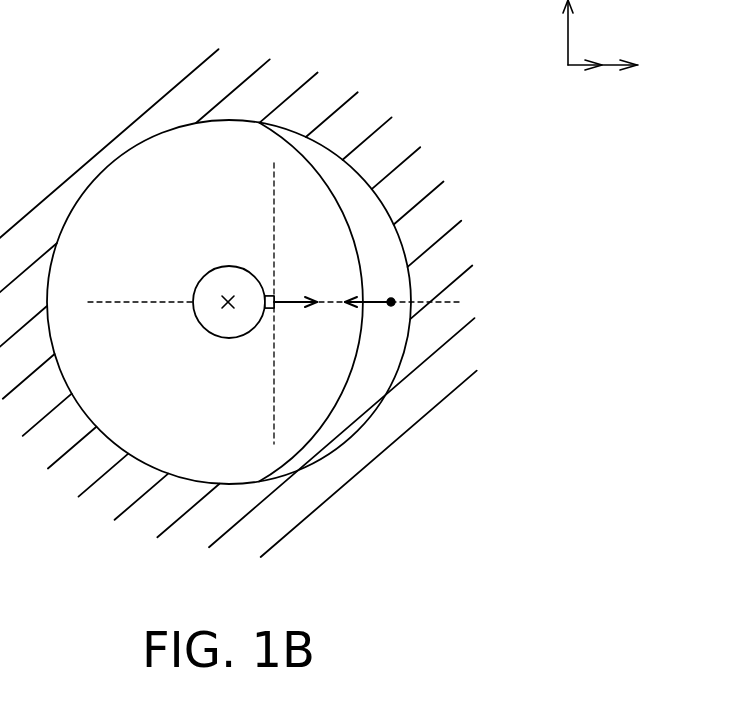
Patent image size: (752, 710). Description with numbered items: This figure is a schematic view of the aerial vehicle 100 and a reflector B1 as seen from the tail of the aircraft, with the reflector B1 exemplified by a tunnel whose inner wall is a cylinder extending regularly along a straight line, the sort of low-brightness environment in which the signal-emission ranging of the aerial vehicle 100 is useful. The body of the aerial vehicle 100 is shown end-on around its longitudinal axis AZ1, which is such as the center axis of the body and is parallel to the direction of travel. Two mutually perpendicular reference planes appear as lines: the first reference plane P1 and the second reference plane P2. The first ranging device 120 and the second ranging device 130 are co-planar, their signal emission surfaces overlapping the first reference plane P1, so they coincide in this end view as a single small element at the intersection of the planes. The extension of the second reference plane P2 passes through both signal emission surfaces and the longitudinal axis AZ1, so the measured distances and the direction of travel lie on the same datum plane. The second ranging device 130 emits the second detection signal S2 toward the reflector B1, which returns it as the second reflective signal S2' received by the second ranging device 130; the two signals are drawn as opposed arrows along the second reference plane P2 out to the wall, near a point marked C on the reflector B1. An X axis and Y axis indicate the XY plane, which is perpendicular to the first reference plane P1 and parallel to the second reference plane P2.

The aerial vehicle 100 is at (200, 278).
The first ranging device 120 is at (411, 240).
The second ranging device 130 is at (269, 302).
The longitudinal axis AZ1 is at (232, 299).
The first reference plane P1 is at (275, 198).
The second reference plane P2 is at (111, 301).
The reflector B1 is at (405, 253).
The second detection signal S2 is at (295, 338).
The second reflective signal S2' is at (433, 336).
The center point C is at (391, 317).
The X axis X is at (614, 66).
The Y axis Y is at (585, 51).